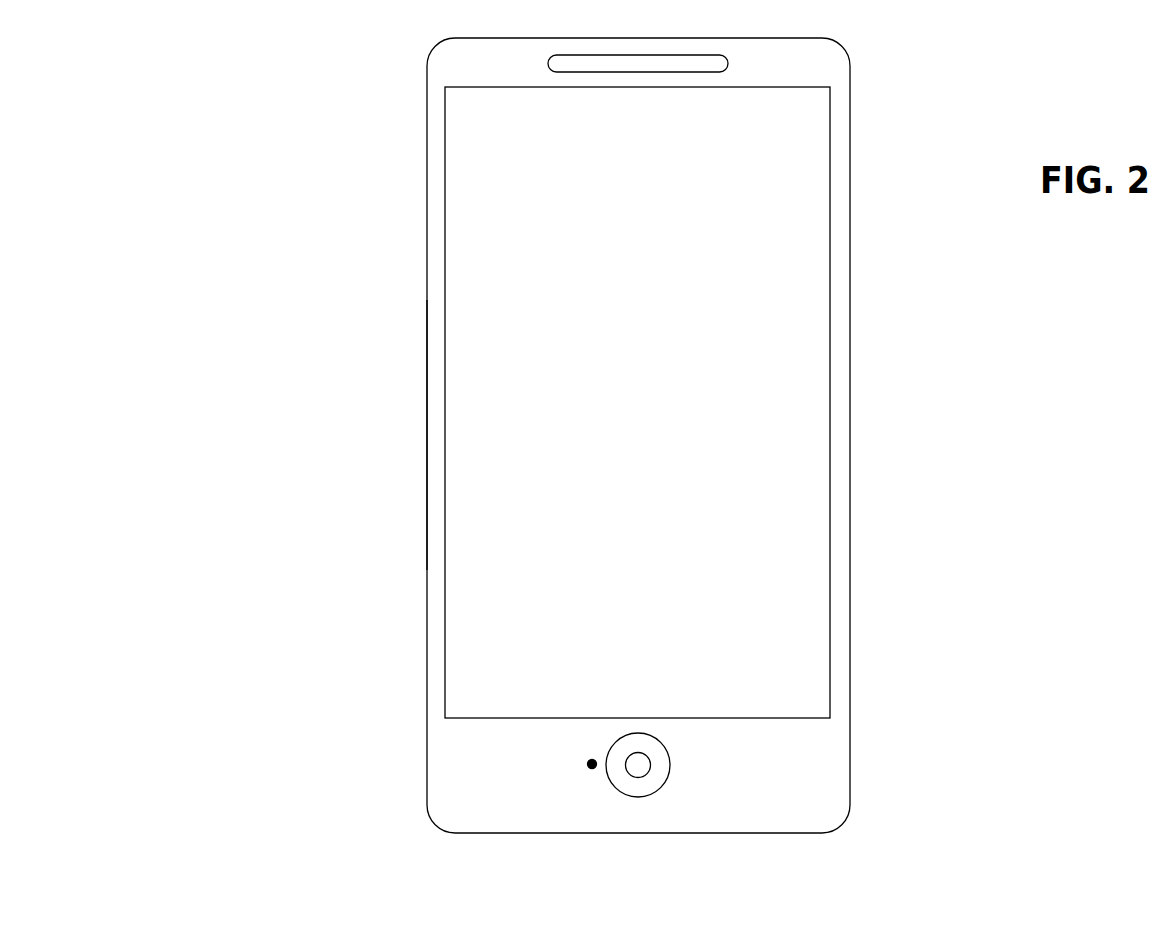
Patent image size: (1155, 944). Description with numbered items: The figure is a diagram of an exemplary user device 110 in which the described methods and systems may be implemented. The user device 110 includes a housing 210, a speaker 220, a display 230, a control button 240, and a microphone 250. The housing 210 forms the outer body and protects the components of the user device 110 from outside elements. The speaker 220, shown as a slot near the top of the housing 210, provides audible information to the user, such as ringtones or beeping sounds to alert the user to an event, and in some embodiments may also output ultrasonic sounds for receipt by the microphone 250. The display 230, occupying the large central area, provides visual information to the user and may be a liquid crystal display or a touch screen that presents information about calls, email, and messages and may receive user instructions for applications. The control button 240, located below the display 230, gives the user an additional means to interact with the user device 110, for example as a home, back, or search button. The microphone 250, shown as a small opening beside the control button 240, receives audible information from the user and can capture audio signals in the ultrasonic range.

The user device 110 is at (312, 103).
The housing 210 is at (427, 263).
The speaker 220 is at (722, 57).
The display 230 is at (718, 272).
The control button 240 is at (640, 795).
The microphone 250 is at (583, 764).